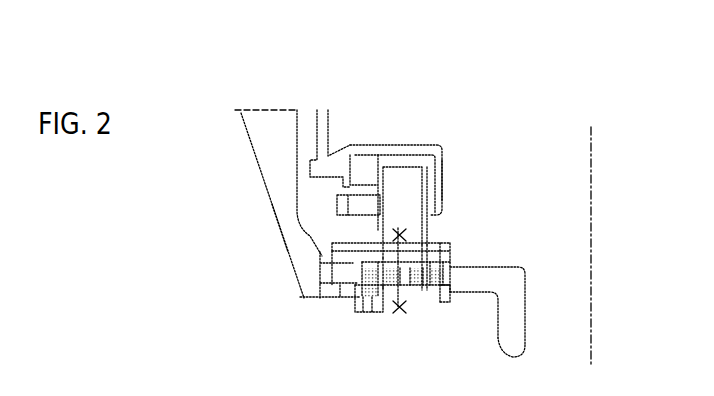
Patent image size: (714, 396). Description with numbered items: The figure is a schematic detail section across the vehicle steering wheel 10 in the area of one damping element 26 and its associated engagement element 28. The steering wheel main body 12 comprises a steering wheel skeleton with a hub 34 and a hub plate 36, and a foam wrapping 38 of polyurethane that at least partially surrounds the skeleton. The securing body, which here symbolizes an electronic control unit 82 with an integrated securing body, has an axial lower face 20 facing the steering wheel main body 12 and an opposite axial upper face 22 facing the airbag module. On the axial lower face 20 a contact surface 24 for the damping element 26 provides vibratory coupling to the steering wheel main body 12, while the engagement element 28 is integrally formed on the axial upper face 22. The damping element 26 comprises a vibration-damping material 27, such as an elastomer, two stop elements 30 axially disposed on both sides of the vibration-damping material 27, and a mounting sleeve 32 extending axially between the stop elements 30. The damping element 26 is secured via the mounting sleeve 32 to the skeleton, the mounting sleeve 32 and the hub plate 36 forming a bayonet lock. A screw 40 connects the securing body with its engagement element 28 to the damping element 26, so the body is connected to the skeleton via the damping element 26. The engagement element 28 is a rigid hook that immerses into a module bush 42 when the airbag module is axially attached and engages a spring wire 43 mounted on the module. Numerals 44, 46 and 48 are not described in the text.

The vehicle steering wheel 10 is at (558, 88).
The steering wheel main body 12 is at (265, 261).
The axial lower face 20 is at (343, 257).
The axial upper face 22 is at (343, 239).
The contact surface 24 is at (378, 255).
The damping element 26 is at (348, 303).
The vibration-damping material 27 is at (375, 292).
The engagement element 28 is at (376, 177).
The stop elements 30 is at (430, 297).
The mounting sleeve 32 is at (360, 292).
The hub 34 is at (523, 312).
The hub plate 36 is at (464, 272).
The foam wrapping 38 is at (270, 170).
The screw 40 is at (400, 275).
The module bushes 42 is at (436, 178).
The spring wire 43 is at (362, 192).
The channel 44 is at (325, 143).
The connection 46 is at (484, 178).
The mounting portion 48 is at (444, 254).
The electronic control unit 82 is at (462, 262).